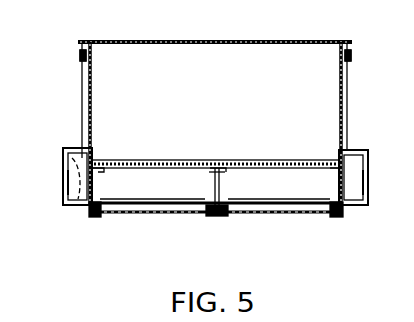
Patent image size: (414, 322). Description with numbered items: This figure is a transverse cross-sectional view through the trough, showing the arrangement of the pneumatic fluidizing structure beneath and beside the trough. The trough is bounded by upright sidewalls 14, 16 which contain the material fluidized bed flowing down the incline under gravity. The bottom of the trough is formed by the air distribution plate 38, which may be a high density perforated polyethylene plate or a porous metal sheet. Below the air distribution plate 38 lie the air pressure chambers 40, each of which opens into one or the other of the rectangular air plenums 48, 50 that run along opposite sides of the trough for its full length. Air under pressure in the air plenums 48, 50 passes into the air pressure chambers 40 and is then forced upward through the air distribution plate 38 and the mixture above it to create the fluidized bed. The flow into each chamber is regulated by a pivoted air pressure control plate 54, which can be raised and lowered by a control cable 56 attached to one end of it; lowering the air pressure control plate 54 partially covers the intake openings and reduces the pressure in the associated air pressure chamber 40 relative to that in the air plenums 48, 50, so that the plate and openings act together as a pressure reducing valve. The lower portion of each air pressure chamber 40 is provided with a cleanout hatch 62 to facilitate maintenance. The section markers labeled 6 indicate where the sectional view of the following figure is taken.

The upright sidewall 14 is at (345, 88).
The upright sidewall 16 is at (84, 88).
The air distribution plate 38 is at (233, 160).
The air pressure chamber 40 is at (163, 190).
The air plenum 48 is at (371, 165).
The air plenum 50 is at (63, 166).
The air pressure control plate 54 is at (69, 192).
The control cable 56 is at (90, 88).
The cleanout hatch 62 is at (195, 192).
The section line 6 is at (97, 158).